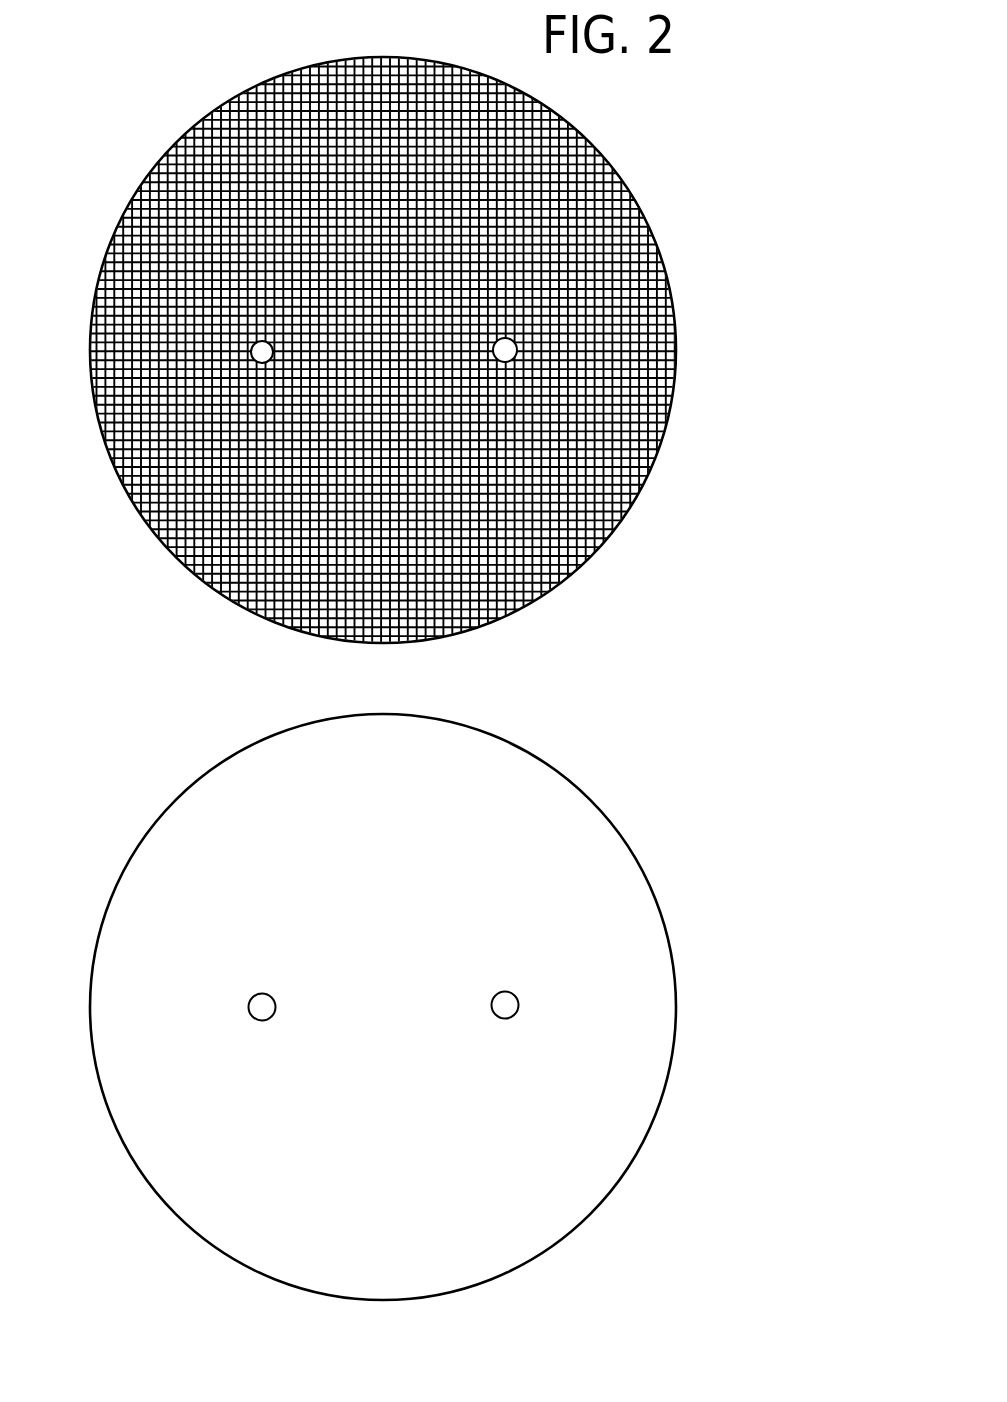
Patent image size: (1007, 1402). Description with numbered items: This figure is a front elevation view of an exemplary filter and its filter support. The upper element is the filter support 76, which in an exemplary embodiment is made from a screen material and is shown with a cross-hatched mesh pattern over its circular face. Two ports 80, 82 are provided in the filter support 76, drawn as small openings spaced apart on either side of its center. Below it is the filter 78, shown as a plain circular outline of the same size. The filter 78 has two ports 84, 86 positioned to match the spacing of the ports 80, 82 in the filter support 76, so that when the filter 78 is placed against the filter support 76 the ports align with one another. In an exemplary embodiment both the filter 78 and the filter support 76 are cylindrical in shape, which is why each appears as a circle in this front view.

The filter support 76 is at (572, 572).
The filter 78 is at (193, 787).
The port 80 is at (255, 362).
The port 82 is at (515, 363).
The port 84 is at (252, 1022).
The port 86 is at (513, 1018).